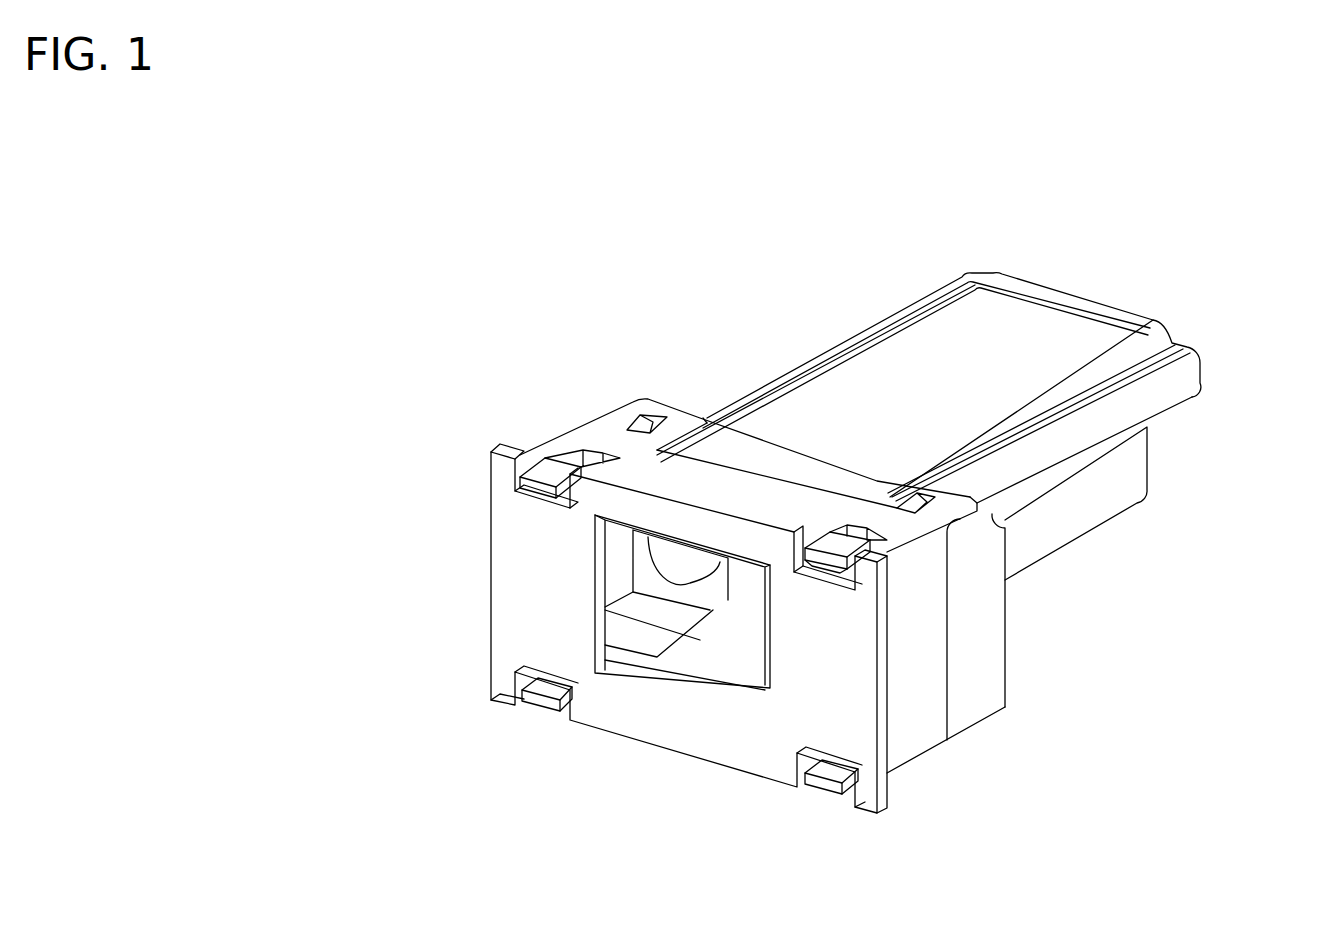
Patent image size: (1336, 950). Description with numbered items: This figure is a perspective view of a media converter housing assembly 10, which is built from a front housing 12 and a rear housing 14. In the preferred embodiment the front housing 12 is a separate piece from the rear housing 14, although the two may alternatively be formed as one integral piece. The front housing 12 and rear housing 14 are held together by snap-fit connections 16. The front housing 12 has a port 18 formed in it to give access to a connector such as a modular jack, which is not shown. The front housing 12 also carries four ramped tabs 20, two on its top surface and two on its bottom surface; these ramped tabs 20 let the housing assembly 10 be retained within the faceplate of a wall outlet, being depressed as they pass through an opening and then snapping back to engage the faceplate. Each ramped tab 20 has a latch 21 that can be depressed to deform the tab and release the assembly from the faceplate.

The media converter housing assembly 10 is at (598, 305).
The front housing 12 is at (512, 597).
The rear housing 14 is at (1028, 360).
The snap-fit connections 16 is at (651, 403).
The port 18 is at (687, 640).
The ramped tabs 20 is at (540, 465).
The latch 21 is at (822, 563).